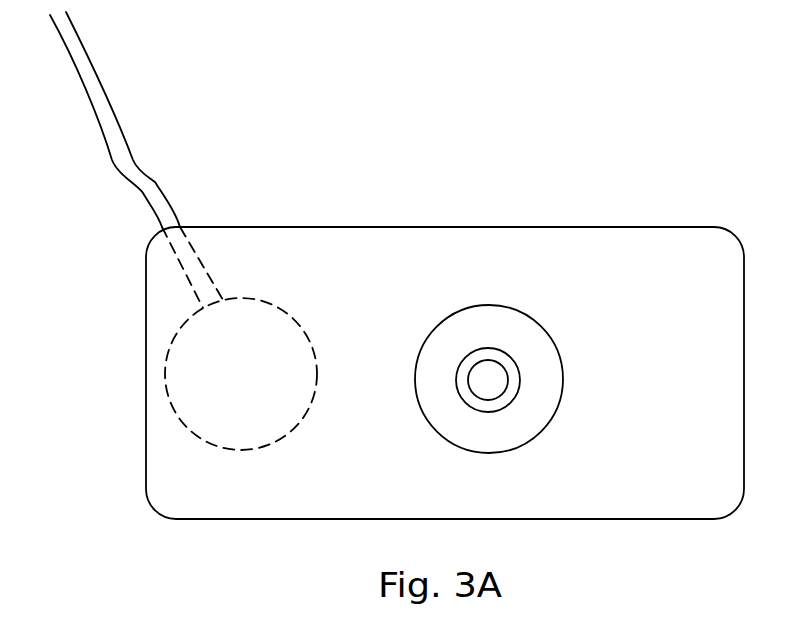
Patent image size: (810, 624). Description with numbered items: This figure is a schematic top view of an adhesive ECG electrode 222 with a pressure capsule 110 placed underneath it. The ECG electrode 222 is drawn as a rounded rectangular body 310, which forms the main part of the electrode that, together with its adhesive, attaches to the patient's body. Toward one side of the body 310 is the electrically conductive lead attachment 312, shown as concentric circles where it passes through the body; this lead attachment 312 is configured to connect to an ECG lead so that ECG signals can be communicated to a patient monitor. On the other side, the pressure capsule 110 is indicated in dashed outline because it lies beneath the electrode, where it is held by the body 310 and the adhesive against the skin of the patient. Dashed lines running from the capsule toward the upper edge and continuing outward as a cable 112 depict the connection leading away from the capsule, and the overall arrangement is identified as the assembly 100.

The sensor assembly 100 is at (163, 300).
The pressure capsule 110 is at (247, 452).
The cable 112 is at (97, 52).
The adhesive ECG electrode 222 is at (445, 316).
The body 310 is at (352, 248).
The electrically conductive lead attachment 312 is at (512, 355).